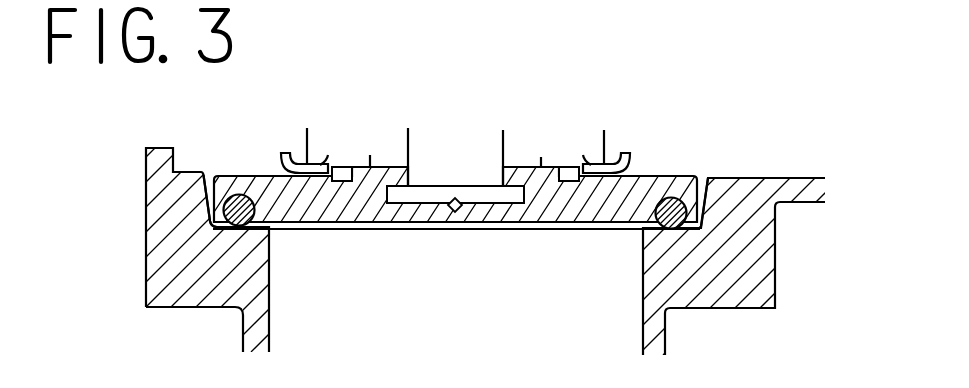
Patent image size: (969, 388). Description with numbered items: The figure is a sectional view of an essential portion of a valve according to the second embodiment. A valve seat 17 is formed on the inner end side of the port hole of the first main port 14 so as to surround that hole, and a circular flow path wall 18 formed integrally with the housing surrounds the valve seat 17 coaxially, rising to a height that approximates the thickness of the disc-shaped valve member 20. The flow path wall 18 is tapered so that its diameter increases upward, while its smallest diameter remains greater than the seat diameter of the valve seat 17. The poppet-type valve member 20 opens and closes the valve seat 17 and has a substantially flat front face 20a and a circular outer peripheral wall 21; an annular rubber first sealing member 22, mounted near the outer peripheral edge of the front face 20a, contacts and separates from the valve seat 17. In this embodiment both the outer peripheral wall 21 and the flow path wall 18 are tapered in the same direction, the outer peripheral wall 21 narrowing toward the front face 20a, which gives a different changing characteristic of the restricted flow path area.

The first main port 14 is at (305, 300).
The valve seat 17 is at (677, 232).
The flow path wall 18 is at (212, 181).
The valve member 20 is at (641, 182).
The front face 20a is at (518, 230).
The outer peripheral wall 21 is at (212, 208).
The first sealing member 22 is at (673, 200).